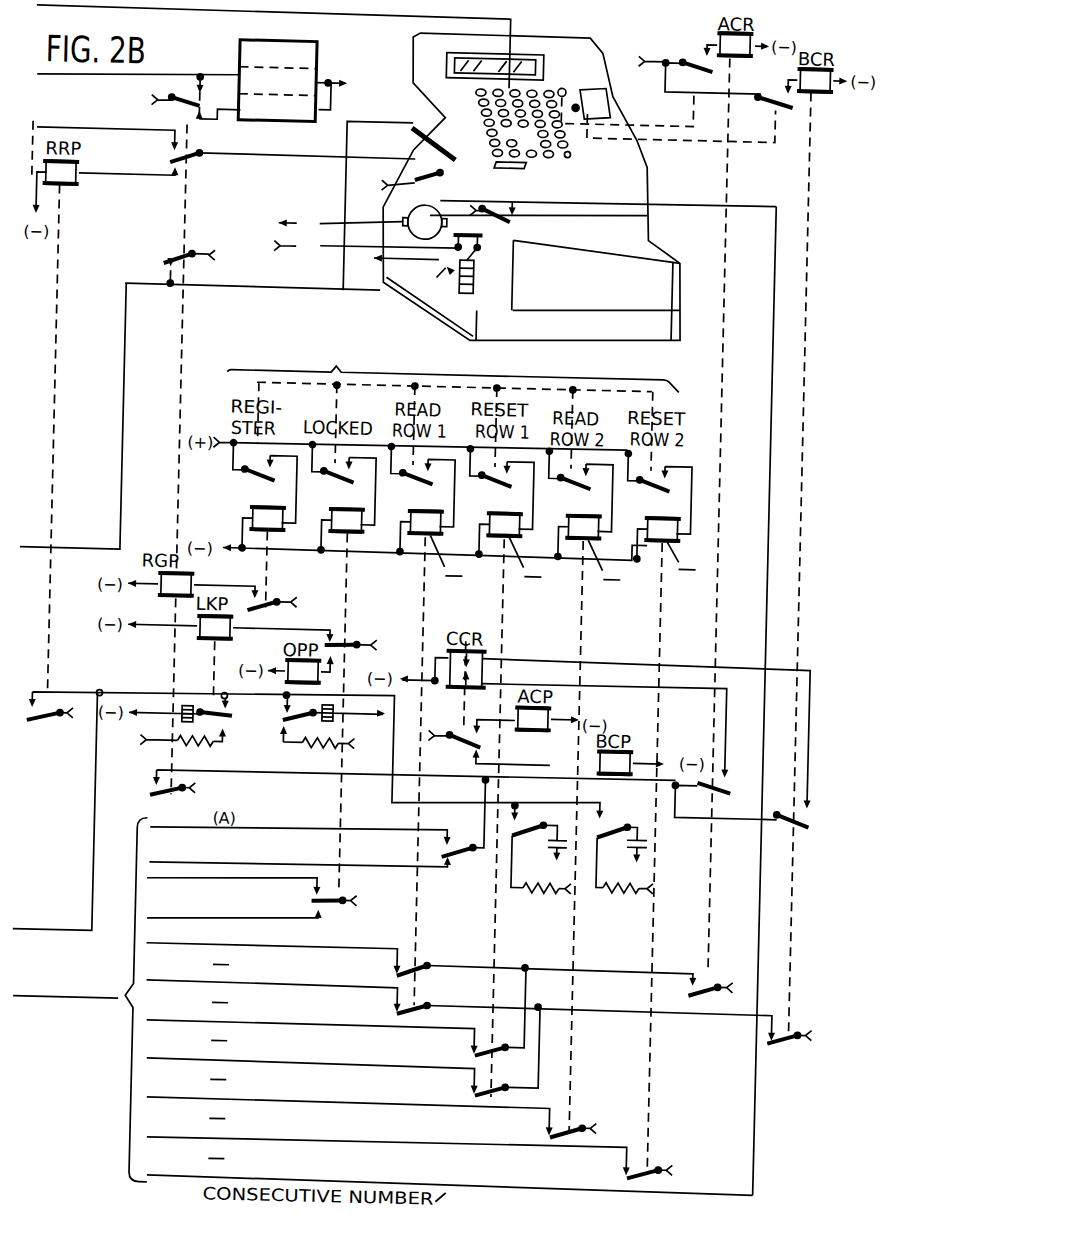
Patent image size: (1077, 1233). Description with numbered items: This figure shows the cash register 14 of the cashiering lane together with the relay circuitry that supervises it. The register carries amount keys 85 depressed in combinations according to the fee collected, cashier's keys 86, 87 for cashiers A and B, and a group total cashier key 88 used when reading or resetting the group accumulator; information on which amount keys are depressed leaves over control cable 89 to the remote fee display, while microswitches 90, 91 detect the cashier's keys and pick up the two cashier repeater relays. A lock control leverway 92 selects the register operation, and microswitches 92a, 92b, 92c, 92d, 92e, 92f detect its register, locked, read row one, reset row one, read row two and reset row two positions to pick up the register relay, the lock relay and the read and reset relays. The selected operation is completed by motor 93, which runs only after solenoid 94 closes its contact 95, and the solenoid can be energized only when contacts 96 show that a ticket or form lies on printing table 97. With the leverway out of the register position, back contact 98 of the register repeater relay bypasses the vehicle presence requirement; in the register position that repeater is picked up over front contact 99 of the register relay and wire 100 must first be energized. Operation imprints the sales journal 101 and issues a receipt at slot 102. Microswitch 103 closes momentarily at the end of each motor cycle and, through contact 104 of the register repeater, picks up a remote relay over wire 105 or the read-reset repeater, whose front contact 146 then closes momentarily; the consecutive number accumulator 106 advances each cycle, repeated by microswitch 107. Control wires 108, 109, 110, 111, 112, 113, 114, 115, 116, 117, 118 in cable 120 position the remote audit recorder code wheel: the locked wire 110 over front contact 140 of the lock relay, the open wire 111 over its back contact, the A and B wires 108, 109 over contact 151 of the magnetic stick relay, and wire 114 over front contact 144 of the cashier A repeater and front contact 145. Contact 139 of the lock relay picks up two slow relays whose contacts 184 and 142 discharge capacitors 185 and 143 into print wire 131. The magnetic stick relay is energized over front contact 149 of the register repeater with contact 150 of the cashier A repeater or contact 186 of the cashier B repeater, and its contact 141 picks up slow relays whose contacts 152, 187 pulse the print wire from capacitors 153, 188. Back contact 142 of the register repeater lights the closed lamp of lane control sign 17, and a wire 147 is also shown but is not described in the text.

The cash register 14 is at (434, 303).
The lane control sign 17 is at (328, 39).
The amount keys 85 is at (521, 123).
The cashier's key 86 is at (564, 75).
The cashier's key 87 is at (578, 91).
The group total cashier key 88 is at (576, 141).
The control cable 89 is at (210, 8).
The microswitch 90 is at (711, 64).
The microswitch 91 is at (774, 89).
The lock control leverway 92 is at (482, 89).
The microswitch 92a is at (258, 474).
The microswitch 92b is at (353, 474).
The microswitch 92c is at (433, 473).
The microswitch 92d is at (511, 473).
The microswitch 92e is at (591, 473).
The microswitch 92f is at (668, 472).
The motor 93 is at (408, 216).
The solenoid 94 is at (480, 268).
The contact 95 is at (481, 251).
The contacts 96 is at (448, 272).
The printing table 97 is at (436, 125).
The back contact of relay RGP 98 is at (178, 258).
The front contact of relay RGR 99 is at (275, 598).
The wire 100 is at (93, 537).
The cash register sales journal 101 is at (608, 96).
The slot 102 is at (604, 39).
The microswitch 103 is at (419, 165).
The contact of relay RGP 104 is at (193, 152).
The wire 105 is at (63, 124).
The consecutive number accumulator 106 is at (524, 153).
The microswitch 107 is at (489, 196).
The A control wire 108 is at (205, 823).
The B control wire 109 is at (178, 864).
The LOCKED control wire 110 is at (184, 874).
The OPEN control wire 111 is at (182, 907).
The control wire 112 is at (184, 934).
The control wire 113 is at (186, 970).
The control wire 114 is at (187, 1008).
The control wire 115 is at (188, 1046).
The control wire 116 is at (189, 1085).
The control wire 117 is at (190, 1125).
The control wire 118 is at (191, 1163).
The cable 120 is at (94, 995).
The PRINT wire 131 is at (72, 918).
The contact of relay LCKR 139 is at (364, 634).
The contact of relay LCKR 140 is at (352, 893).
The contact of relay CCR 141 is at (478, 734).
The back contact of relay RGP 142 is at (188, 99).
The capacitor 143 is at (338, 713).
The front contact of relay ACR 144 is at (728, 966).
The front contact 145 is at (508, 1040).
The front contact of relay RRP 146 is at (60, 721).
The conductor 147 is at (70, 74).
The front contact of relay RGP 149 is at (168, 790).
The front contact of relay ACR 150 is at (745, 781).
The contact of relay CCR 151 is at (470, 848).
The front contact of relay ACP 152 is at (550, 817).
The capacitor 153 is at (568, 838).
The front contact of relay LKP 184 is at (246, 716).
The capacitor 185 is at (204, 700).
The front contact of relay BCR 186 is at (818, 806).
The front contact of relay BCP 187 is at (632, 815).
The capacitor 188 is at (668, 826).